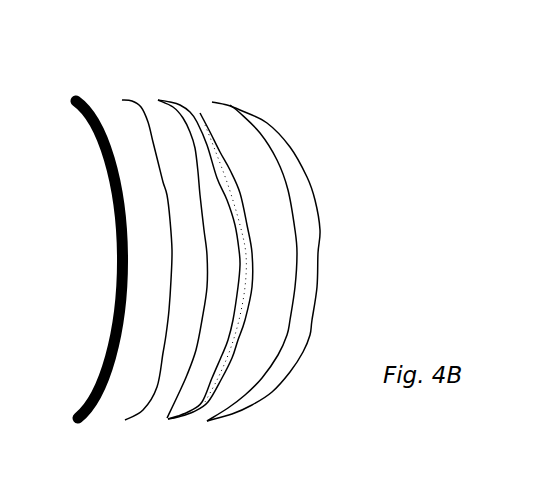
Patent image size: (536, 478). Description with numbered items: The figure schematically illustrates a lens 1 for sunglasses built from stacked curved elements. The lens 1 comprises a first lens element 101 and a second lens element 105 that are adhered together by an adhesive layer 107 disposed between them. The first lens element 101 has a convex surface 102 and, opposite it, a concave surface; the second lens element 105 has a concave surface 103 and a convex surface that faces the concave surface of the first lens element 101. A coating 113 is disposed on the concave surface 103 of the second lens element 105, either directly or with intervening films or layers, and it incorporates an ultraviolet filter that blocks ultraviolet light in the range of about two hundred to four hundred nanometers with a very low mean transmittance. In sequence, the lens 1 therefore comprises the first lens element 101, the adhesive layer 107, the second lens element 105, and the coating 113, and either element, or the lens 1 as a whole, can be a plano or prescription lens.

The lens 1 is at (393, 116).
The first lens element 101 is at (305, 283).
The convex surface 102 is at (313, 208).
The concave surface 103 is at (163, 353).
The second lens element 105 is at (162, 146).
The adhesive layer 107 is at (200, 113).
The coating 113 is at (112, 249).